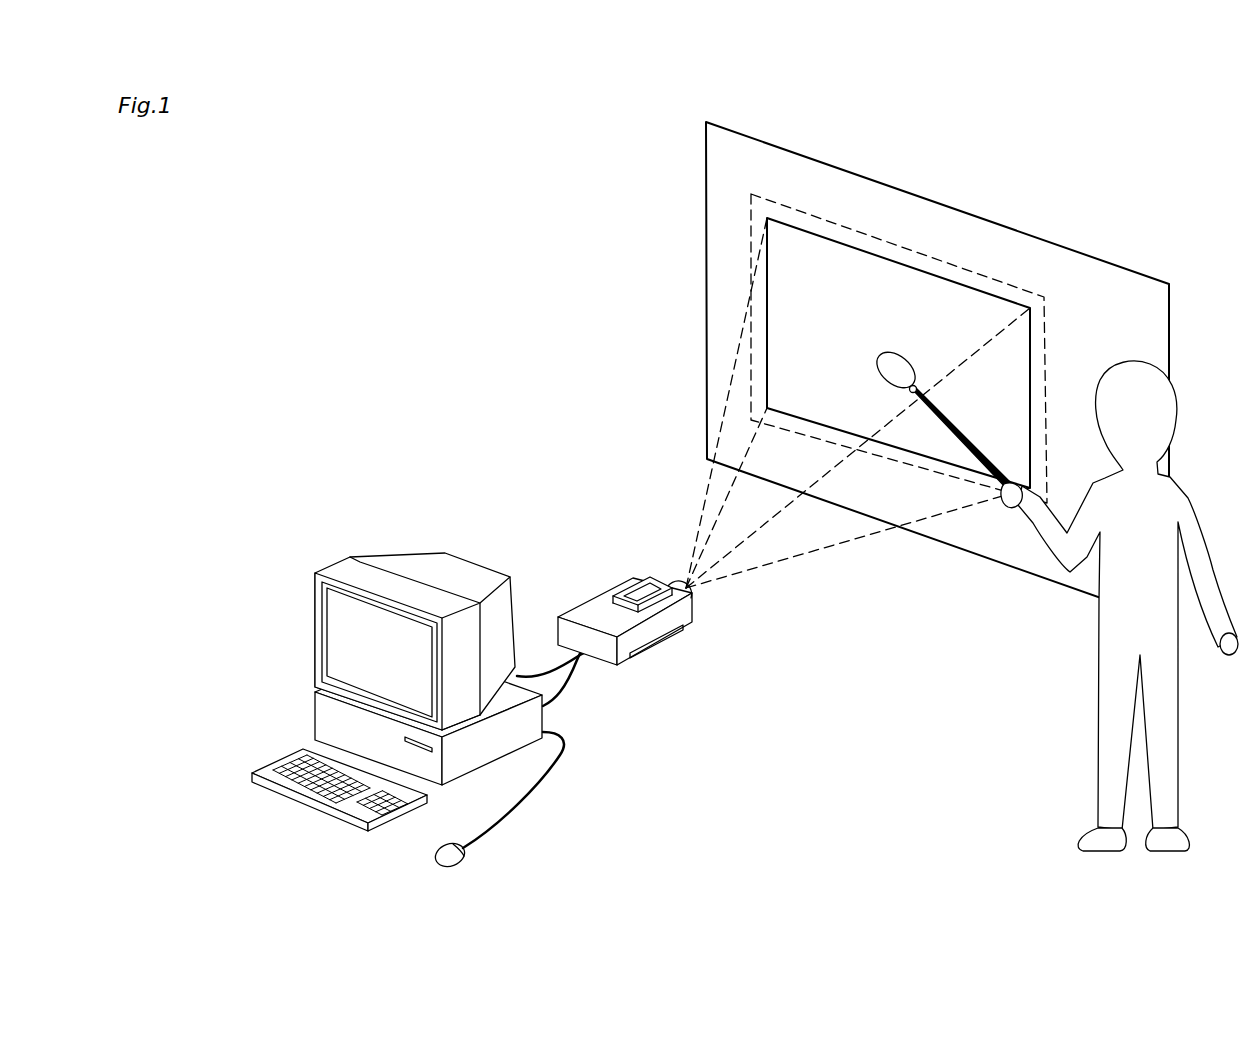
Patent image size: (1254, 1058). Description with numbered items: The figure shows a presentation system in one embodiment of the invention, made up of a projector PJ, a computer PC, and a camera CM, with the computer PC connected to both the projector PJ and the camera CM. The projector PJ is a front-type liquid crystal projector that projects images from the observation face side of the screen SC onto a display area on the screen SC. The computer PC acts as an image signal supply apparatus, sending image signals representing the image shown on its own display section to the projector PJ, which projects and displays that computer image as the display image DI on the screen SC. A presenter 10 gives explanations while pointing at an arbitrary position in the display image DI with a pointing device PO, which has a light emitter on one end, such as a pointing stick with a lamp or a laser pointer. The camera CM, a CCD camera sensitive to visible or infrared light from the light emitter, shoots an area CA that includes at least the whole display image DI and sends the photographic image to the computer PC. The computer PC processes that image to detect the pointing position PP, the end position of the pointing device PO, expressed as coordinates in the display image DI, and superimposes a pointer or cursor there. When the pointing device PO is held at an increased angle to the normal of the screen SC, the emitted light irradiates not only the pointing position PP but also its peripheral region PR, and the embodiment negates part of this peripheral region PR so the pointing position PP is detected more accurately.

The screen SC is at (705, 225).
The display image DI is at (797, 297).
The area CA is at (923, 254).
The camera CM is at (643, 593).
The projector PJ is at (637, 642).
The computer PC is at (337, 718).
The peripheral region PR is at (898, 380).
The pointing position PP is at (913, 393).
The pointing device PO is at (1000, 488).
The presenter 10 is at (1098, 715).